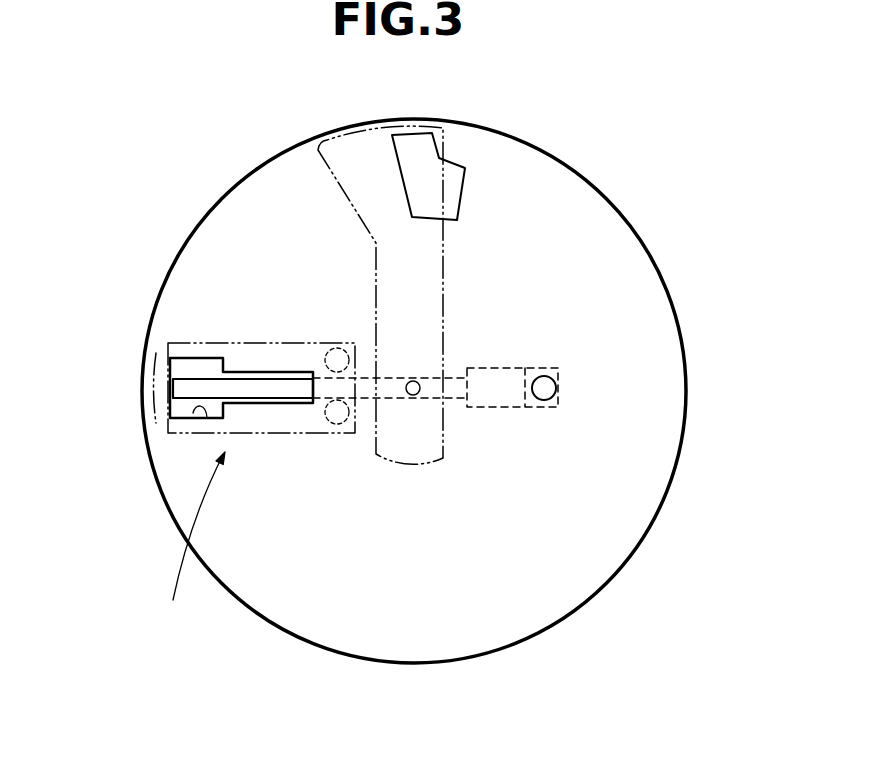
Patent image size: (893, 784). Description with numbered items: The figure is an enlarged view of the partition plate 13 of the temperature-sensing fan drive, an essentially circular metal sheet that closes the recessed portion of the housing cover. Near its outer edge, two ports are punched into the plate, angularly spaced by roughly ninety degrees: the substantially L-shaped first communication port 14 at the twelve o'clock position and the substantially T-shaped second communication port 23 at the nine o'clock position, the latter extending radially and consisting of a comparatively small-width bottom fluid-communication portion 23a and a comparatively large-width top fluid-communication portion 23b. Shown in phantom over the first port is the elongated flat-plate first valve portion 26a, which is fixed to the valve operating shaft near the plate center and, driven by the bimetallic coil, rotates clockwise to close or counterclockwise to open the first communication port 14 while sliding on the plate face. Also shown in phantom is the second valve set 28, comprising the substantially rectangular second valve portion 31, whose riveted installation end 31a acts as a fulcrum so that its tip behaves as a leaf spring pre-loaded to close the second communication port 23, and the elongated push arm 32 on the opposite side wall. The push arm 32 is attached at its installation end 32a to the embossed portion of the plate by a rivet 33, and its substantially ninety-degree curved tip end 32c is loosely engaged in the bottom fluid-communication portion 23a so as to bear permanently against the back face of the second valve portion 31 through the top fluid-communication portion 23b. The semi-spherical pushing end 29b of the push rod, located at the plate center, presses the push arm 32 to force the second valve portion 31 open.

The partition plate 13 is at (565, 190).
The first communication port 14 is at (453, 187).
The first valve portion 26a is at (425, 310).
The second valve portion 31 is at (267, 422).
The installation end 31a is at (333, 348).
The curved tip end 32c is at (178, 390).
The second communication port 23 is at (185, 405).
The bottom fluid-communication portion 23a is at (288, 398).
The top fluid-communication portion 23b is at (193, 413).
The second valve set 28 is at (189, 542).
The push arm 32 is at (363, 388).
The installation end 32a is at (523, 400).
The rivet 33 is at (542, 387).
The semi-spherical pushing end 29b is at (410, 395).